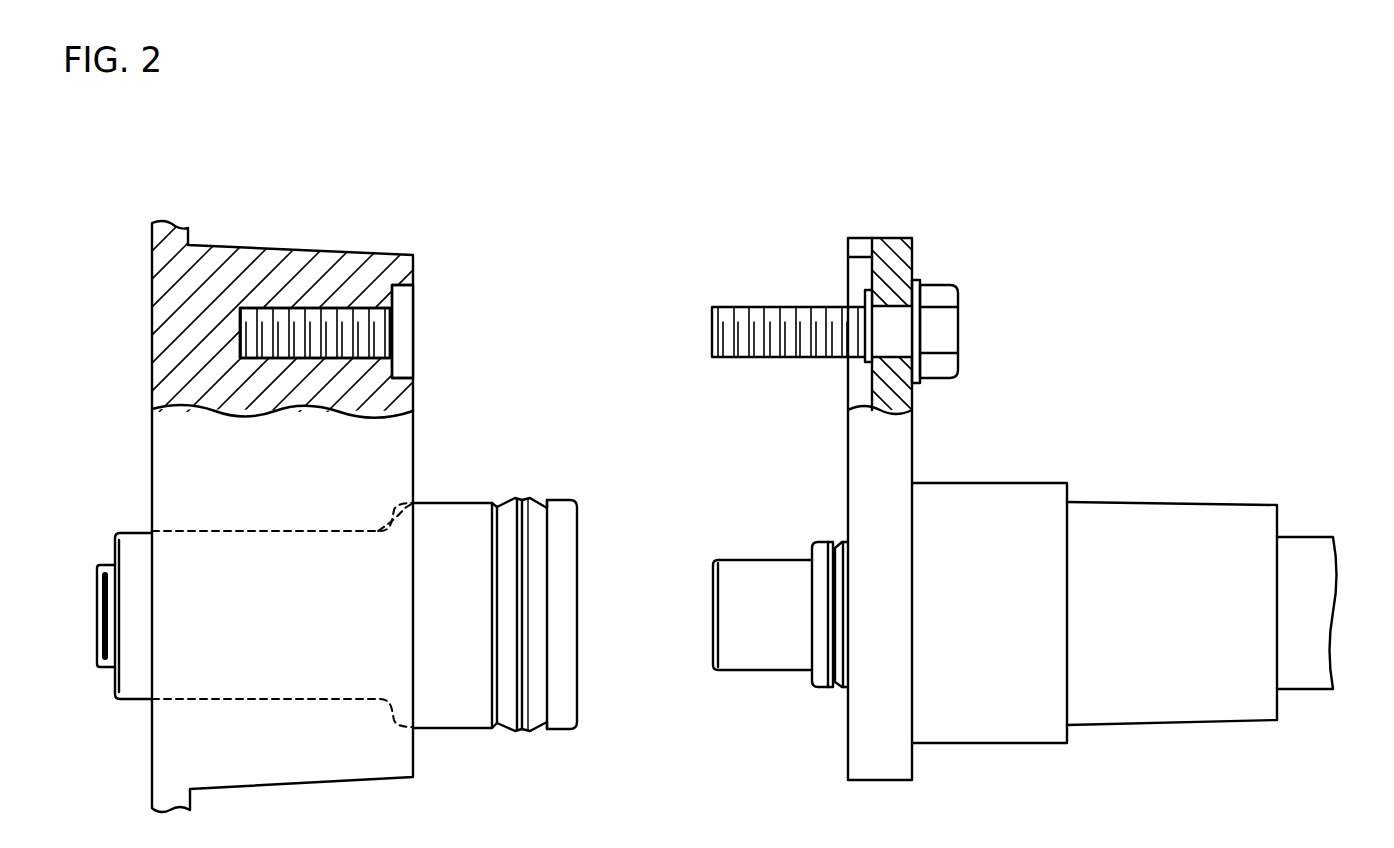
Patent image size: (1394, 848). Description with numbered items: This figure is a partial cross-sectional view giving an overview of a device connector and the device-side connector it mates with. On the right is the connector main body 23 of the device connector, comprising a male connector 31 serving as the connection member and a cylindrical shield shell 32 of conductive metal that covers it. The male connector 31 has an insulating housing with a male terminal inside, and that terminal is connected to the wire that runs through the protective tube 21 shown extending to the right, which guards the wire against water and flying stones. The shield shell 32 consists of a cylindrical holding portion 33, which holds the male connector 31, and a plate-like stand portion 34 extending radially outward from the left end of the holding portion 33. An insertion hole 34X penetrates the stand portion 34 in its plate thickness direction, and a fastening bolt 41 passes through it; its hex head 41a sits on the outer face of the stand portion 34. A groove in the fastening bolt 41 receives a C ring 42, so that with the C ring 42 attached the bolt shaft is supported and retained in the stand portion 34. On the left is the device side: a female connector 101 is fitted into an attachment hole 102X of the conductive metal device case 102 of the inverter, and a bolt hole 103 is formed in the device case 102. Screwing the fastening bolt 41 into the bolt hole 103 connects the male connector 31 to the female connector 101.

The protective tube 21 is at (1300, 692).
The connector main body 23 is at (1260, 330).
The male connector 31 is at (750, 671).
The shield shell 32 is at (1144, 414).
The holding portion 33 is at (1165, 503).
The stand portion 34 is at (912, 398).
The insertion hole 34X is at (922, 318).
The fastening bolt 41 is at (768, 306).
The bolt head 41a is at (958, 330).
The C ring 42 is at (864, 292).
The female connector 101 is at (557, 731).
The device case 102 is at (413, 757).
The attachment hole 102X is at (398, 526).
The bolt hole 103 is at (386, 342).